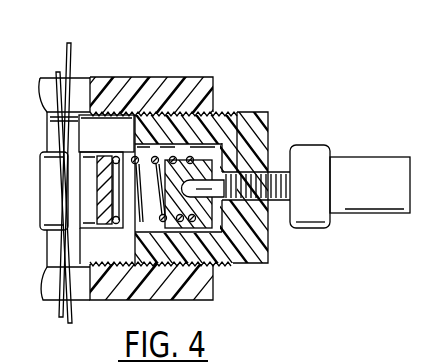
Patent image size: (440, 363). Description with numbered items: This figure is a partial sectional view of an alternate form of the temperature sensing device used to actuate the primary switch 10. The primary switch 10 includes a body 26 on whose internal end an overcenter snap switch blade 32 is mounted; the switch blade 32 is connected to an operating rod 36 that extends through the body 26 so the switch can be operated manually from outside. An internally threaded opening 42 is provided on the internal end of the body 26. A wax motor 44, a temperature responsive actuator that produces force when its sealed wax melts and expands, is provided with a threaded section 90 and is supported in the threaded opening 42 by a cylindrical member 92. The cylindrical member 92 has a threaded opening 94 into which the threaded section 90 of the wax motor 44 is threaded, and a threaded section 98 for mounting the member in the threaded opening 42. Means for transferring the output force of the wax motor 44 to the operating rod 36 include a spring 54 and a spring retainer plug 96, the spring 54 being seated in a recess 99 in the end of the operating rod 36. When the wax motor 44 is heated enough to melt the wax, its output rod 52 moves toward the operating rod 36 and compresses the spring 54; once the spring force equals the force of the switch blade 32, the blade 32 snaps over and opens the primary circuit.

The primary switch 10 is at (208, 194).
The body 26 is at (160, 77).
The overcenter snap switch blade 32 is at (73, 62).
The operating rod 36 is at (43, 170).
The internally threaded opening 42 is at (113, 112).
The wax motor 44 is at (357, 157).
The output rod 52 is at (208, 164).
The spring 54 is at (137, 229).
The threaded section 90 is at (278, 204).
The cylindrical member 92 is at (268, 112).
The threaded opening 94 is at (272, 176).
The spring retainer plug 96 is at (217, 252).
The threaded section 98 is at (226, 111).
The recess 99 is at (105, 163).